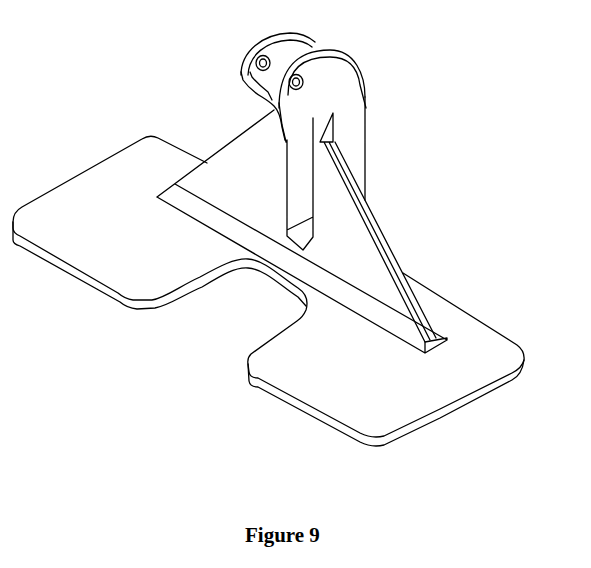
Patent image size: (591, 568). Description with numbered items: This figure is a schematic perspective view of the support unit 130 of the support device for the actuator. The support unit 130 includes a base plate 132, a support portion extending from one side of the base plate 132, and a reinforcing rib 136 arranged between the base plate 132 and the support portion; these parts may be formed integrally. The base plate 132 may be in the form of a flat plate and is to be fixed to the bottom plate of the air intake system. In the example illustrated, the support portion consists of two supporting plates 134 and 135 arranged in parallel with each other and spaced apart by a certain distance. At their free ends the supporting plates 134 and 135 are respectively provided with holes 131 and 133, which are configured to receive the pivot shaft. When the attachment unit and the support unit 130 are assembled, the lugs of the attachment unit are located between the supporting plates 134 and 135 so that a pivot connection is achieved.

The support unit 130 is at (125, 132).
The hole 131 is at (370, 110).
The base plate 132 is at (443, 387).
The hole 133 is at (243, 68).
The supporting plate 134 is at (353, 160).
The supporting plate 135 is at (310, 40).
The reinforcing rib 136 is at (368, 278).